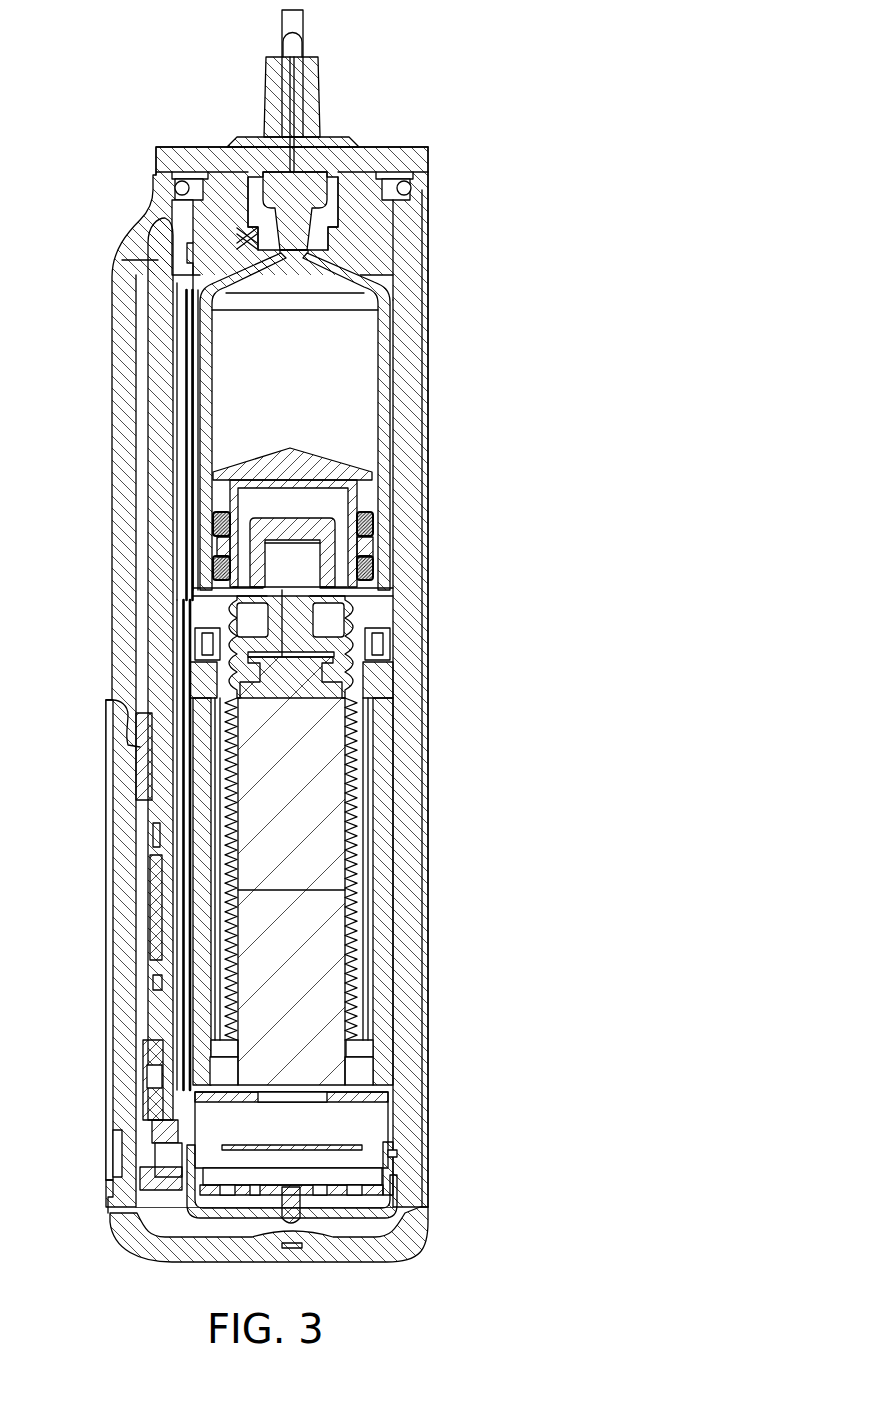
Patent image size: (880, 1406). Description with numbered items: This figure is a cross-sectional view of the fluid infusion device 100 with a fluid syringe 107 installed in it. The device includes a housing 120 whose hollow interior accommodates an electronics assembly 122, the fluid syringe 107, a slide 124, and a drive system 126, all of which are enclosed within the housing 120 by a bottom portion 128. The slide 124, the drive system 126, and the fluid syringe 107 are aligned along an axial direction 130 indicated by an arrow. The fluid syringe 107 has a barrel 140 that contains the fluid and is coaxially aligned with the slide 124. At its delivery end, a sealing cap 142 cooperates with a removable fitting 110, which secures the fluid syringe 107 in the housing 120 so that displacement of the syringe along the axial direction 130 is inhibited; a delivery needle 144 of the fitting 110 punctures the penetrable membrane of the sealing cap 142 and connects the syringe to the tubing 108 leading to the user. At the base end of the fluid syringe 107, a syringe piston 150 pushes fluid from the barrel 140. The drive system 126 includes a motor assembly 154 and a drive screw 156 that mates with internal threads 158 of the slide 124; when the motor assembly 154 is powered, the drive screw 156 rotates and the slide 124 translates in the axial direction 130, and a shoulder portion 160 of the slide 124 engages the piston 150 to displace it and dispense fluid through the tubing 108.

The fluid infusion device 100 is at (487, 296).
The fluid syringe 107 is at (338, 377).
The tubing 108 is at (300, 23).
The fitting 110 is at (390, 147).
The housing 120 is at (412, 358).
The electronics assembly 122 is at (140, 920).
The slide 124 is at (358, 747).
The drive system 126 is at (338, 933).
The bottom portion 128 is at (400, 1253).
The axial direction 130 is at (293, 712).
The barrel 140 is at (360, 450).
The sealing cap 142 is at (233, 180).
The delivery needle 144 is at (288, 145).
The syringe piston 150 is at (372, 548).
The motor assembly 154 is at (375, 1124).
The drive screw 156 is at (247, 648).
The internal threads 158 is at (342, 853).
The shoulder portion 160 is at (352, 597).